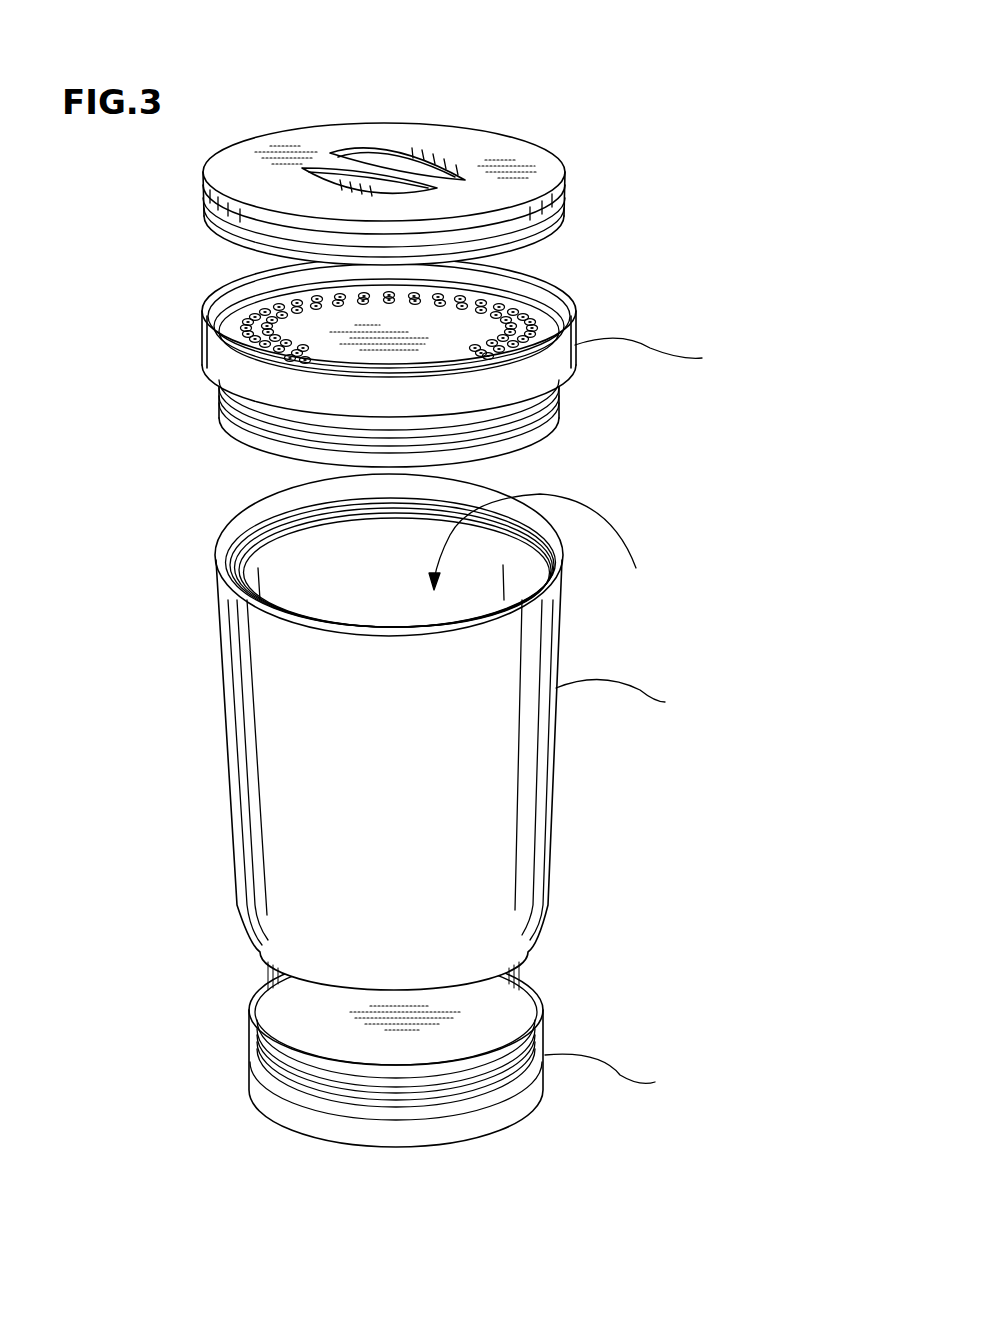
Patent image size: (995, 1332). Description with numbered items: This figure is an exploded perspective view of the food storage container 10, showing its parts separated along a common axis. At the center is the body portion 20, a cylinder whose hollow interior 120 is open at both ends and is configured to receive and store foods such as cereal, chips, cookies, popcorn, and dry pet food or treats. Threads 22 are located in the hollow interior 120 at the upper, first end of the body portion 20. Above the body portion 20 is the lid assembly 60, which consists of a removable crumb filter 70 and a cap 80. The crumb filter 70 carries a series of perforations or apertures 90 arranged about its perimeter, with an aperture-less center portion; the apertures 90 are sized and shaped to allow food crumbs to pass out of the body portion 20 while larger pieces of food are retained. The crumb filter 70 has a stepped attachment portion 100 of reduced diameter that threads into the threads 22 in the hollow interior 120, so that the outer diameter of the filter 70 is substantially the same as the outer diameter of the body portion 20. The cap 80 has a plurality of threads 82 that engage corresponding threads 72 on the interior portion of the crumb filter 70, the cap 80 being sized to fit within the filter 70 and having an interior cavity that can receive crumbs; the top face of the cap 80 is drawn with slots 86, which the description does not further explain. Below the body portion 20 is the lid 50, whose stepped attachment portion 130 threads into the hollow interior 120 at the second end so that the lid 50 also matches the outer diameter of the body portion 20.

The food storage apparatus/container 10 is at (692, 76).
The body portion 20 is at (505, 768).
The threads 22 is at (216, 549).
The lid 50 is at (530, 1085).
The lid assembly 60 is at (127, 440).
The crumb filter 70 is at (528, 370).
The threads 72 is at (229, 286).
The cap 80 is at (552, 178).
The threads 82 is at (558, 228).
The cap slots 86 is at (407, 180).
The perforations or apertures 90 is at (232, 339).
The stepped attachment portion 100 is at (540, 428).
The hollow interior 120 is at (546, 546).
The stepped attachment portion 130 is at (540, 1022).